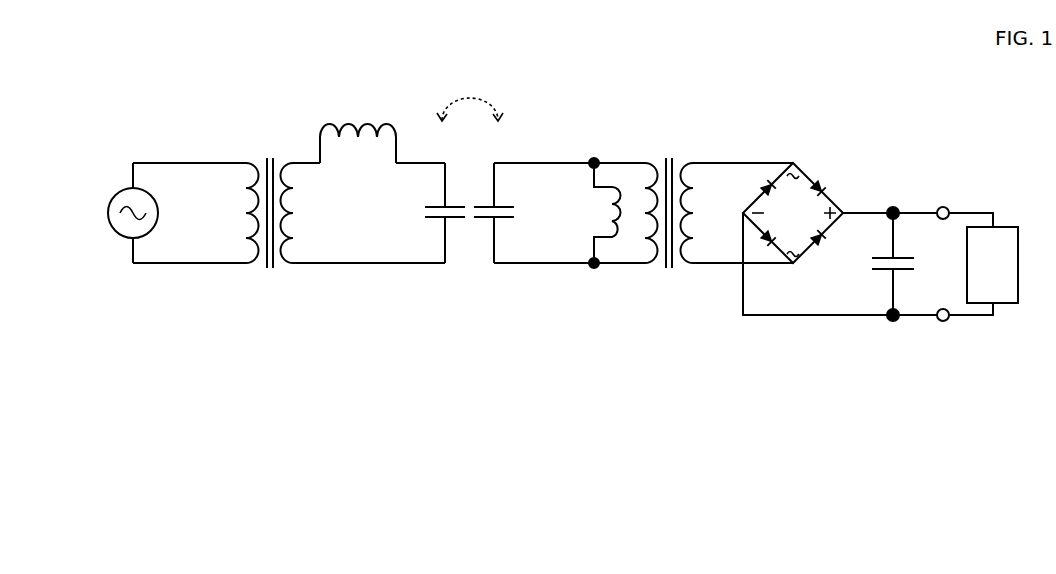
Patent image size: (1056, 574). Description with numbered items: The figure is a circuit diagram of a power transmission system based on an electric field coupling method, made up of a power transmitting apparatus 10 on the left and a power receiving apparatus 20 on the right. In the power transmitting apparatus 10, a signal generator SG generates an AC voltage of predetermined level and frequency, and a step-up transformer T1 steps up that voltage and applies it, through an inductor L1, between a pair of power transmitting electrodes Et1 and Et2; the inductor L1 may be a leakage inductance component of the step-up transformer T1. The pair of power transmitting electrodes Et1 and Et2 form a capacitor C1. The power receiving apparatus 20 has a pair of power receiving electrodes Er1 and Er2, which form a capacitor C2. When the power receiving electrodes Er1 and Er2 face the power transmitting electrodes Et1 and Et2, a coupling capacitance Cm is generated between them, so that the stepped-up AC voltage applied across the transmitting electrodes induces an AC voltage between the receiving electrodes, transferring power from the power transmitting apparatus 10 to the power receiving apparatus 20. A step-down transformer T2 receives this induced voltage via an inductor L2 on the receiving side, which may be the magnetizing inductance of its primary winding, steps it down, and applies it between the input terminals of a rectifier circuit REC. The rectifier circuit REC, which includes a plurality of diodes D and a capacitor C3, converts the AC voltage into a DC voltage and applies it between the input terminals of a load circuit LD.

The power transmitting apparatus 10 is at (220, 303).
The power receiving apparatus 20 is at (620, 303).
The signal generator SG is at (116, 213).
The step-up transformer T1 is at (269, 203).
The inductor L1 is at (358, 144).
The capacitor C1 is at (441, 213).
The power transmitting electrode Et1 is at (452, 205).
The power transmitting electrode Et2 is at (458, 219).
The power receiving electrode Er1 is at (485, 204).
The power receiving electrode Er2 is at (478, 219).
The coupling capacitance Cm is at (470, 100).
The capacitor C2 is at (500, 213).
The inductor L2 is at (594, 213).
The step-down transformer T2 is at (669, 203).
The rectifier circuit REC is at (870, 168).
The diode D is at (793, 217).
The capacitor C3 is at (897, 264).
The load circuit LD is at (1006, 265).